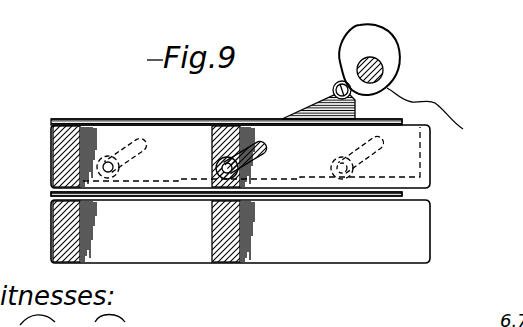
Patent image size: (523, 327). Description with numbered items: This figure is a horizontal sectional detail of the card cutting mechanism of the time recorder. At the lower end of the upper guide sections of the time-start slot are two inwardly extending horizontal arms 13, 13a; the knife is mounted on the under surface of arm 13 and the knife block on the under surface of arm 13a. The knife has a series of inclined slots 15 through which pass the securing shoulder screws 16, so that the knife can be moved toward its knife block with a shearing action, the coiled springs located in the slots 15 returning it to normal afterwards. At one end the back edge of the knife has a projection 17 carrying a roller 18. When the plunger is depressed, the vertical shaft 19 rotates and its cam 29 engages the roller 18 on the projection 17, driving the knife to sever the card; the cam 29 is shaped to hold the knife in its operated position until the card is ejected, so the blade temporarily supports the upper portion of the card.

The horizontal arm 13 is at (220, 263).
The horizontal arm 13a is at (425, 158).
The inclined slots 15 is at (133, 140).
The securing shoulder screws 16 is at (101, 157).
The projection 17 is at (305, 108).
The roller 18 is at (336, 83).
The vertical shaft 19 is at (452, 133).
The cam 29 is at (373, 50).